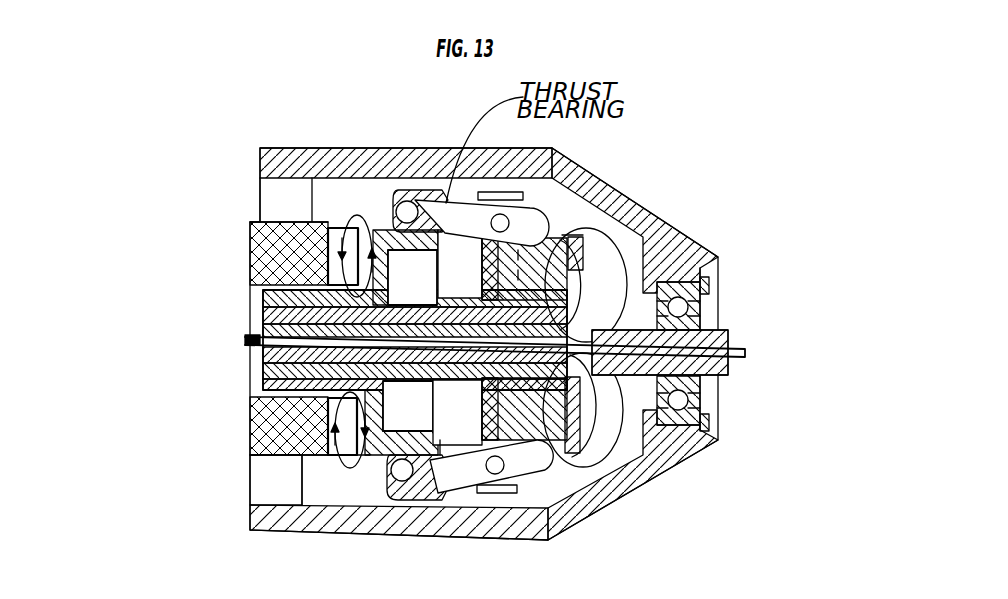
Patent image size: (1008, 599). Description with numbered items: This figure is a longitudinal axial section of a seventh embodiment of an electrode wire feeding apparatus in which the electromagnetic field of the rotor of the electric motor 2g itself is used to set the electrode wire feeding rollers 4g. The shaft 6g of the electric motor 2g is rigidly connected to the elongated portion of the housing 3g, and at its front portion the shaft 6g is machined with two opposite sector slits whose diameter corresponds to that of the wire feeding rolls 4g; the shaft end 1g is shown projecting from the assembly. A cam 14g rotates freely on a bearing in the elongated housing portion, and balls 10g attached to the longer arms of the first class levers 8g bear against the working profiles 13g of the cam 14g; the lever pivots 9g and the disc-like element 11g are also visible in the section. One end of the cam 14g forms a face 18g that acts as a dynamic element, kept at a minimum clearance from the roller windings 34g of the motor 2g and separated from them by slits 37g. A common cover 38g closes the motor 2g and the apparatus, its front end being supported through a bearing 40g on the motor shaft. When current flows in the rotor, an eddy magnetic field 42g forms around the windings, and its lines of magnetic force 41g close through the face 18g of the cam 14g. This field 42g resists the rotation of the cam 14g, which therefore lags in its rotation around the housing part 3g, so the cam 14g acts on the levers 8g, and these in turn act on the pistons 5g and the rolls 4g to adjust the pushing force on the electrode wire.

The shaft 1g is at (740, 357).
The electric motor 2g is at (265, 472).
The housing 3g is at (520, 310).
The electrode wire feeding rollers 4g is at (613, 257).
The pistons 5g is at (560, 290).
The shaft 6g is at (305, 322).
The first class levers 8g is at (548, 207).
The pivot pin 9g is at (502, 222).
The balls 10g is at (433, 287).
The disc 11g is at (597, 343).
The working profiles 13g is at (390, 458).
The cam 14g is at (374, 452).
The face 18g is at (340, 455).
The roller windings 34g is at (268, 250).
The slits 37g is at (337, 226).
The common cover 38g is at (272, 160).
The bearing 40g is at (693, 318).
The lines of magnetic force 41g is at (290, 420).
The eddy magnetic field 42g is at (357, 215).